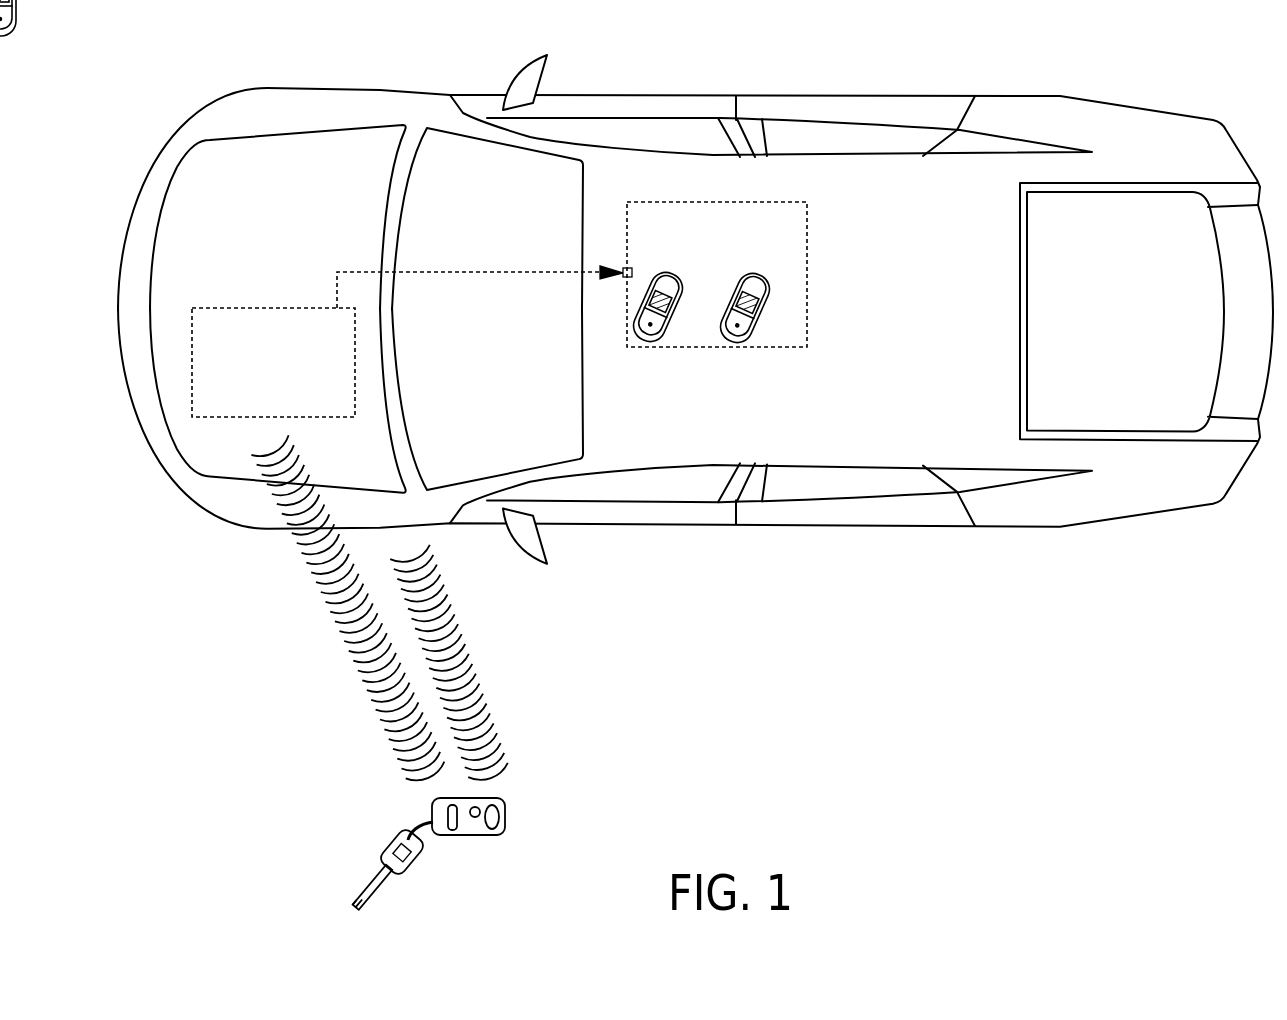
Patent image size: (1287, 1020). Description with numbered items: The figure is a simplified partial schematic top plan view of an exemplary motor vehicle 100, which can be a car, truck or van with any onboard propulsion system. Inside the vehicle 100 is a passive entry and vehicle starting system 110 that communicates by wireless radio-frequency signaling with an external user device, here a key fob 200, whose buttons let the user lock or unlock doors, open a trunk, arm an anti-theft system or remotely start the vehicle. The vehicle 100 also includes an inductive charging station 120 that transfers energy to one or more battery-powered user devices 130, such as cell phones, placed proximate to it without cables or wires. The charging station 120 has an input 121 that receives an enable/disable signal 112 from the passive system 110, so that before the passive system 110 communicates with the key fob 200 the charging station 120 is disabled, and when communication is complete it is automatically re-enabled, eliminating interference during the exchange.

The motor vehicle 100 is at (295, 87).
The passive entry and vehicle starting system 110 is at (271, 305).
The enable/disable signal 112 is at (350, 270).
The inductive charging station 120 is at (717, 200).
The input 121 is at (625, 267).
The battery-powered user device 130 is at (777, 287).
The key fob 200 is at (506, 821).